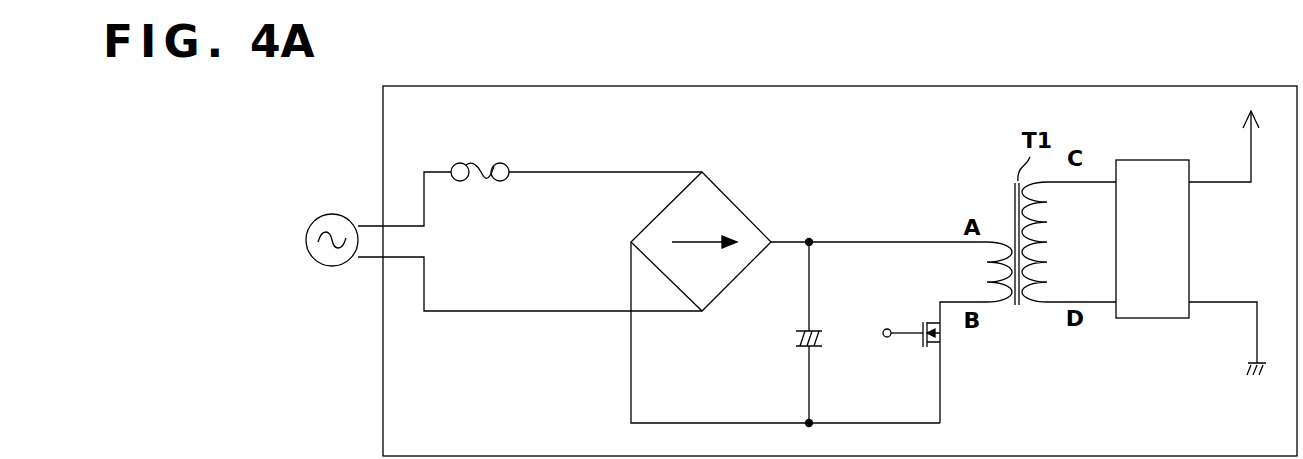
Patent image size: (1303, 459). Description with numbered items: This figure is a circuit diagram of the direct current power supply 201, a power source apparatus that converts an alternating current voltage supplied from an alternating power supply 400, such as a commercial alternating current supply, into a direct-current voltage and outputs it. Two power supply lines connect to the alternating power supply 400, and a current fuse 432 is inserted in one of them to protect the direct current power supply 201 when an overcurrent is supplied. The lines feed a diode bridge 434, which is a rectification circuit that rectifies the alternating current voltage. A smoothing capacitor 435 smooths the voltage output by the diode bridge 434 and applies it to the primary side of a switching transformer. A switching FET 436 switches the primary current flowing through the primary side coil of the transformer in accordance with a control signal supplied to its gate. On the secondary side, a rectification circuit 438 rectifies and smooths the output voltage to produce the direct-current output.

The direct current power supply 201 is at (698, 86).
The alternating power supply 400 is at (340, 218).
The current fuse 432 is at (481, 164).
The diode bridge 434 is at (730, 205).
The smoothing capacitor 435 is at (821, 329).
The switching FET 436 is at (925, 350).
The rectification circuit 438 is at (1148, 318).